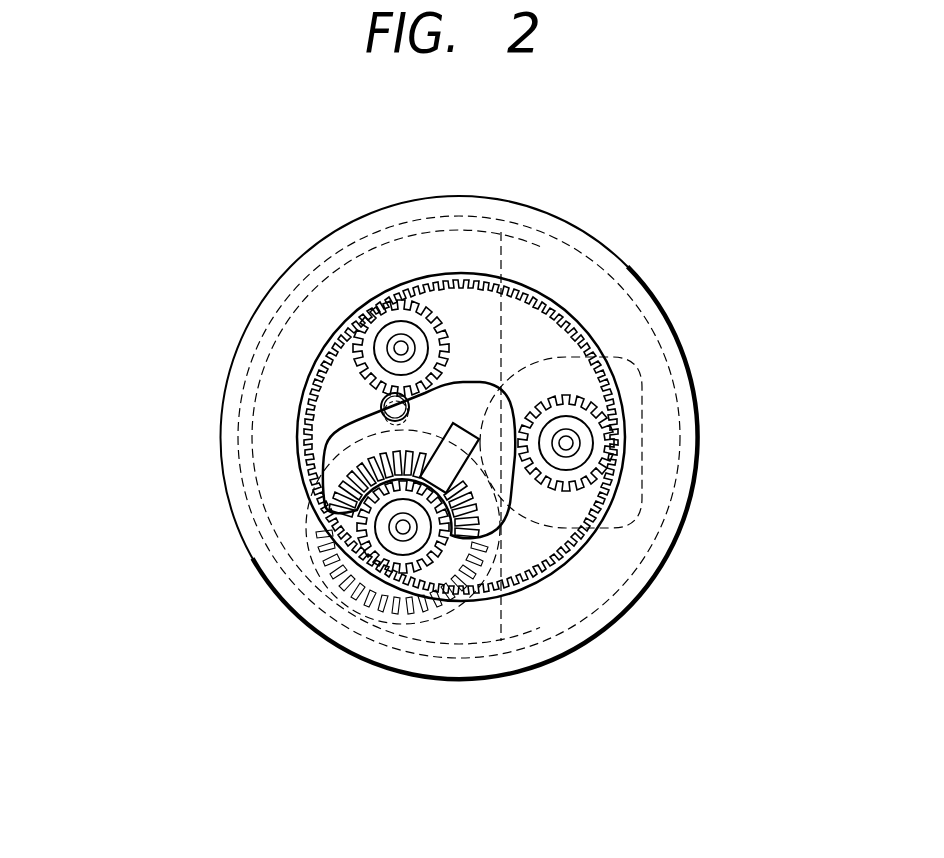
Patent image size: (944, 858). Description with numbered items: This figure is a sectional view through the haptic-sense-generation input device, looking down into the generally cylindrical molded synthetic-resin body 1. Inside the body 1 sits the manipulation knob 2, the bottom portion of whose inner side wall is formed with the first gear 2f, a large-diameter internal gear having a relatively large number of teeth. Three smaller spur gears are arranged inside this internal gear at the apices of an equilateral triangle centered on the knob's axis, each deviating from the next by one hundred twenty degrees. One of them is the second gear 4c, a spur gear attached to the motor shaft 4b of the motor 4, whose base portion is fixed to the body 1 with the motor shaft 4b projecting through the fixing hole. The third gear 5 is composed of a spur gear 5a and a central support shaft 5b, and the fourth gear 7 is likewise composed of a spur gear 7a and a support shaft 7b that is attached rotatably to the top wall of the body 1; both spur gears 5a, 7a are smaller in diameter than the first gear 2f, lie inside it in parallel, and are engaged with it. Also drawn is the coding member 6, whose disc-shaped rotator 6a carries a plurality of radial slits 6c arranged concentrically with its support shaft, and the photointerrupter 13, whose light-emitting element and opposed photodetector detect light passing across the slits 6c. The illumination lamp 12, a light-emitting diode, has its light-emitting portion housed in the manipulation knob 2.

The body 1 is at (362, 205).
The manipulation knob 2 is at (475, 350).
The first gear 2f is at (553, 318).
The motor 4 is at (619, 397).
The motor shaft 4b is at (566, 443).
The second gear 4c is at (572, 395).
The third gear 5 is at (345, 617).
The spur gear 5a is at (403, 527).
The support shaft 5b is at (392, 533).
The coding member 6 is at (318, 503).
The rotator 6a is at (297, 527).
The slits 6c is at (322, 468).
The fourth gear 7 is at (301, 306).
The spur gear 7a is at (401, 348).
The support shaft 7b is at (401, 348).
The illumination lamp 12 is at (382, 405).
The photointerrupter 13 is at (468, 428).